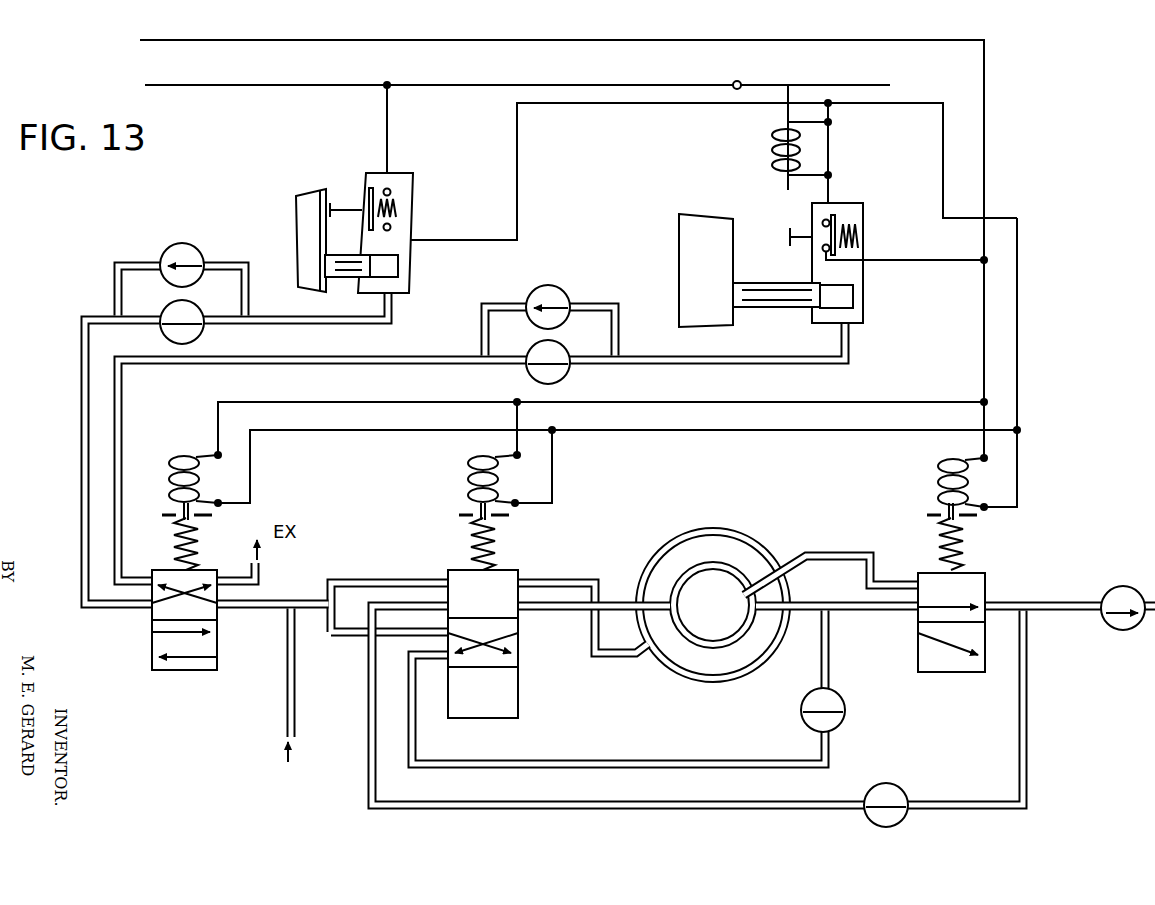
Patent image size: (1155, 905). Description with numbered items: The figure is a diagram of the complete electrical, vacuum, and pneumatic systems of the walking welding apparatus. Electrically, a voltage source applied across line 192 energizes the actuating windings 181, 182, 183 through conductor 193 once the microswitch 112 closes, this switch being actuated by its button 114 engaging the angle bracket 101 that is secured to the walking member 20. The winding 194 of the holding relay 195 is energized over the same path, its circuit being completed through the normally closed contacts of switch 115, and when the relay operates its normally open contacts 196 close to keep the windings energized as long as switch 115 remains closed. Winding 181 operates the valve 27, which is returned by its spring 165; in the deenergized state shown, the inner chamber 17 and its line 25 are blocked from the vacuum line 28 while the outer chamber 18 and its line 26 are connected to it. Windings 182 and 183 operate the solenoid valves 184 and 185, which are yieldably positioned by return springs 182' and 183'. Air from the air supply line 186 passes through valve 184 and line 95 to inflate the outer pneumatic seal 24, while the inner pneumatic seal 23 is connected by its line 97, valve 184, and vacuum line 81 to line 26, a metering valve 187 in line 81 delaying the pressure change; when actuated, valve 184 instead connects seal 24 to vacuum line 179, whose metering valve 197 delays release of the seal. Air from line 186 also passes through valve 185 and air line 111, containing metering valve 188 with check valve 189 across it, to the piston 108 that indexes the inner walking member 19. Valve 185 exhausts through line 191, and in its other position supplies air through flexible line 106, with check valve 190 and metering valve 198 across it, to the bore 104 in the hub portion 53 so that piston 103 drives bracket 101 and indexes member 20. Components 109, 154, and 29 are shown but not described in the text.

The line 192 is at (236, 85).
The normally open contacts 196 is at (892, 94).
The conductor 193 is at (590, 103).
The winding 194 is at (772, 149).
The holding relay 195 is at (830, 136).
The microswitch 112 is at (391, 171).
The button 114 is at (332, 206).
The angle bracket 101 is at (297, 230).
The hub portion 53 is at (408, 225).
The piston 103 is at (348, 279).
The bore 104 is at (397, 264).
The flexible line 106 is at (330, 323).
The check valve 190 is at (172, 244).
The metering valve 198 is at (200, 335).
The check valve 189 is at (562, 293).
The metering valve 188 is at (566, 376).
The inner walking member 19 is at (678, 244).
The walking member 20 is at (866, 238).
The switch 115 is at (837, 204).
The piston 108 is at (753, 307).
The cylinder 109 is at (852, 299).
The air line 111 is at (123, 399).
The actuating winding 183 is at (173, 479).
The actuating winding 182 is at (465, 479).
The actuating winding 181 is at (934, 484).
The conductor 154 is at (970, 468).
The return spring 183' is at (168, 536).
The return spring 182' is at (465, 536).
The spring 165 is at (943, 536).
The line 191 is at (265, 572).
The solenoid valve 185 is at (228, 669).
The air supply line 186 is at (298, 690).
The vacuum line 179 is at (366, 656).
The solenoid valve 184 is at (536, 698).
The vacuum line 81 is at (408, 736).
The line 97 is at (620, 601).
The air line 95 is at (644, 660).
The inner chamber 17 is at (720, 606).
The inner pneumatic seal 23 is at (706, 621).
The outer chamber 18 is at (718, 670).
The outer pneumatic seal 24 is at (676, 678).
The line 25 is at (870, 548).
The line 26 is at (855, 598).
The valve 27 is at (1063, 551).
The vacuum line 28 is at (1051, 598).
The pump 29 is at (1116, 582).
The metering valve 187 is at (844, 700).
The metering valve 197 is at (902, 794).